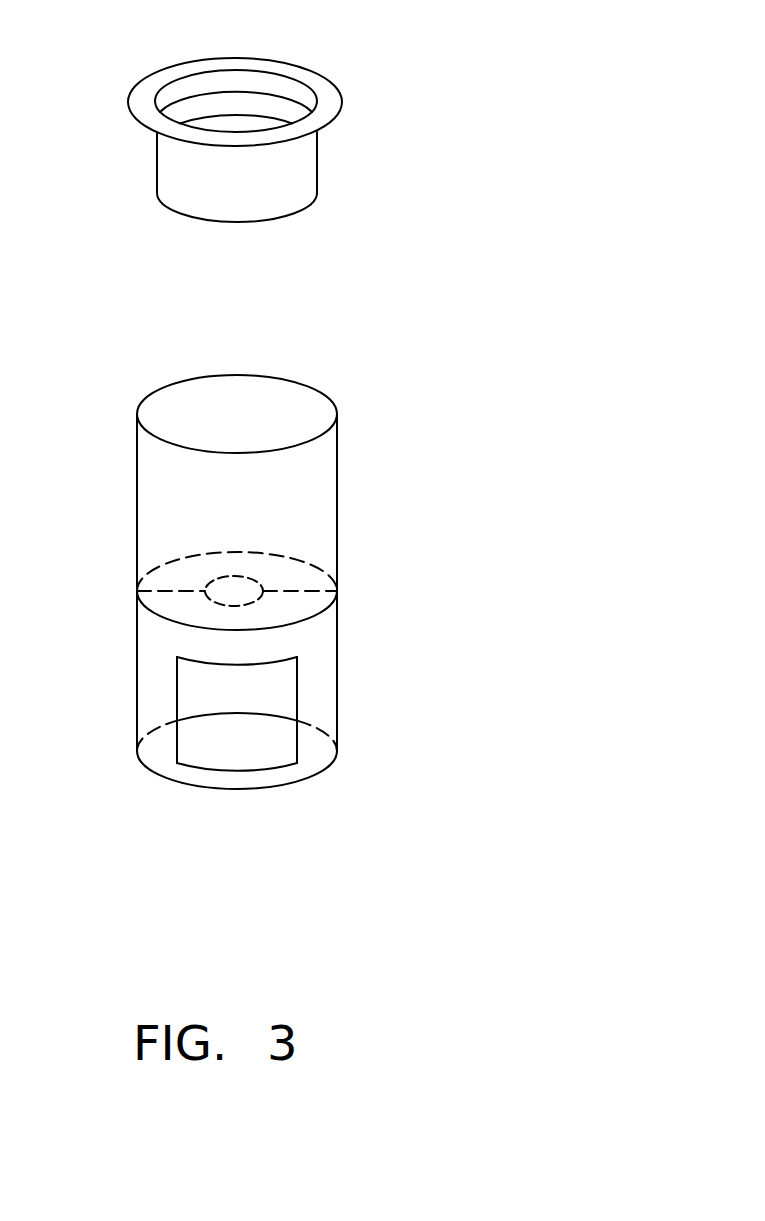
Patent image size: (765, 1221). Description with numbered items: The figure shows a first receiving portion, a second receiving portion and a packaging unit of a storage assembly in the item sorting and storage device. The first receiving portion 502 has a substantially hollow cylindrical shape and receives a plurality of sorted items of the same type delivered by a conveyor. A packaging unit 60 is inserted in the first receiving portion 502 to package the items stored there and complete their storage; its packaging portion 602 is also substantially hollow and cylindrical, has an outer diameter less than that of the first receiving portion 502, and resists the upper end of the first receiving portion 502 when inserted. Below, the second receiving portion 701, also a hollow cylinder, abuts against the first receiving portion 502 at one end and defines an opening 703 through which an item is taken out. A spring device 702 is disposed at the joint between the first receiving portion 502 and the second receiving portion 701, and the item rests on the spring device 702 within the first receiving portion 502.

The packaging unit 60 is at (295, 113).
The packaging portion 602 is at (332, 97).
The first receiving portion 502 is at (298, 515).
The spring device 702 is at (308, 580).
The second receiving portion 701 is at (251, 690).
The opening 703 is at (195, 688).